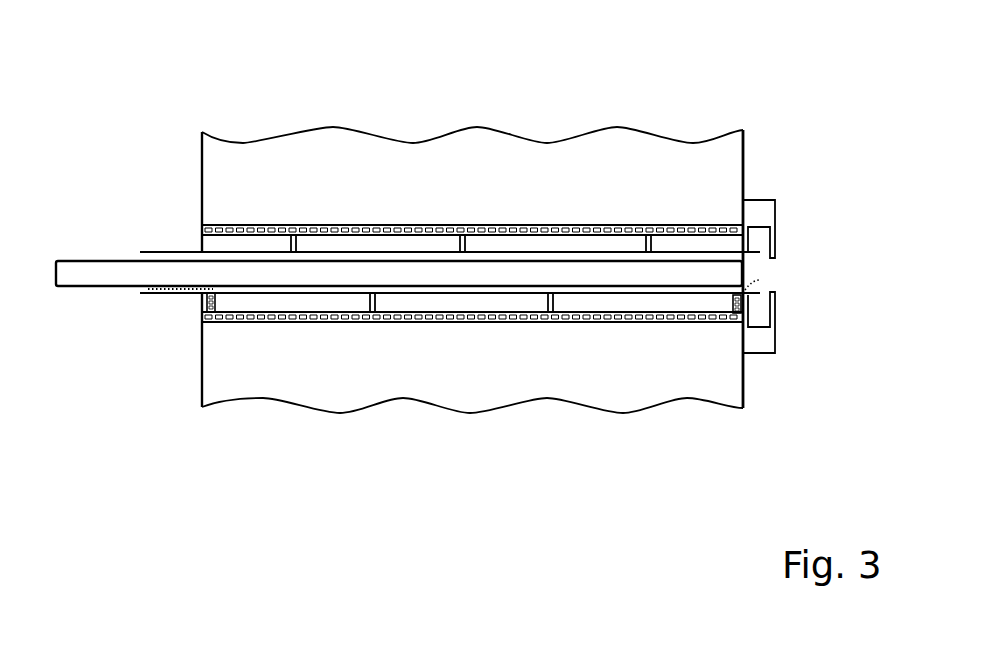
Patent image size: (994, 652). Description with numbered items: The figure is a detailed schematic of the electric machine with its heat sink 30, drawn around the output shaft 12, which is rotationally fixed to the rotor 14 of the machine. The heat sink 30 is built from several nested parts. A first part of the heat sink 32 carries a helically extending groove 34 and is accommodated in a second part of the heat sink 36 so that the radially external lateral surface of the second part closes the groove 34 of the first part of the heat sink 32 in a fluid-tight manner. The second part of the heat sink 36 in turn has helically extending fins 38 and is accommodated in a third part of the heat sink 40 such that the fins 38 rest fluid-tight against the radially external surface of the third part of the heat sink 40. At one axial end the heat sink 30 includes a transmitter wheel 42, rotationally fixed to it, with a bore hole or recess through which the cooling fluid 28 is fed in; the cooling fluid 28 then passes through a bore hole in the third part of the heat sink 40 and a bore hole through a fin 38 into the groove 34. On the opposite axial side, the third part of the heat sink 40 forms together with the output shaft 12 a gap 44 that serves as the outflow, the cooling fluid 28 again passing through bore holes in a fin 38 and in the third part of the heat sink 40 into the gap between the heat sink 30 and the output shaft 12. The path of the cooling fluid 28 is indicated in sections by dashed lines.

The output shaft 12 is at (498, 287).
The rotor 14 is at (743, 160).
The cooling fluid 28 is at (760, 280).
The heat sink 30 is at (183, 222).
The first part of the heat sink 32 is at (303, 322).
The helically extending groove 34 is at (370, 322).
The second part of the heat sink 36 is at (465, 313).
The helically extending fins 38 is at (555, 303).
The third part of the heat sink 40 is at (705, 293).
The transmitter wheel 42 is at (778, 243).
The gap 44 is at (132, 305).